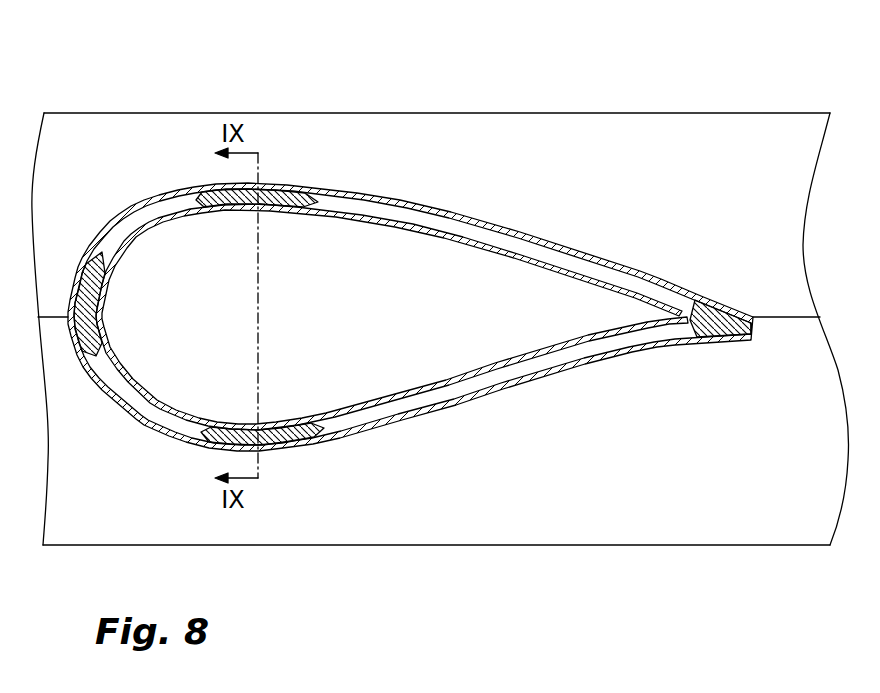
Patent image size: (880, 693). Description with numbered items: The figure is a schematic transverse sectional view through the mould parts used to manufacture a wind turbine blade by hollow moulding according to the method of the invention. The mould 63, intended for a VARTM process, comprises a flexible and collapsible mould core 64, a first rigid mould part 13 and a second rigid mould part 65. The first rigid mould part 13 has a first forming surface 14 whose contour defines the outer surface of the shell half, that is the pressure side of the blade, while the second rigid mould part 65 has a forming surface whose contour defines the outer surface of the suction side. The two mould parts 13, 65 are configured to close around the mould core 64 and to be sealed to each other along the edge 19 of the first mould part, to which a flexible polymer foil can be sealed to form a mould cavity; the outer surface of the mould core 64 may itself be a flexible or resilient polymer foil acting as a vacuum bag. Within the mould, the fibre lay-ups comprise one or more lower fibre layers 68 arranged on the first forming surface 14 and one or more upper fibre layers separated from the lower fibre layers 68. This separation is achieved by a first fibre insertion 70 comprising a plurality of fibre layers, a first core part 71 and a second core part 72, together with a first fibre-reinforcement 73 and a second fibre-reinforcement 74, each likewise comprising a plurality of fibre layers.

The mould 63 is at (729, 100).
The second rigid mould part 65 is at (728, 170).
The first rigid mould part 13 is at (741, 510).
The edge 19 is at (788, 317).
The mould core 64 is at (440, 302).
The lower fibre layers 68 is at (455, 407).
The second core part 72 is at (495, 380).
The first forming surface 14 is at (568, 352).
The first fibre insertion 70 is at (311, 445).
The first core part 71 is at (132, 393).
The first fibre-reinforcement 73 is at (83, 367).
The second fibre-reinforcement 74 is at (722, 330).